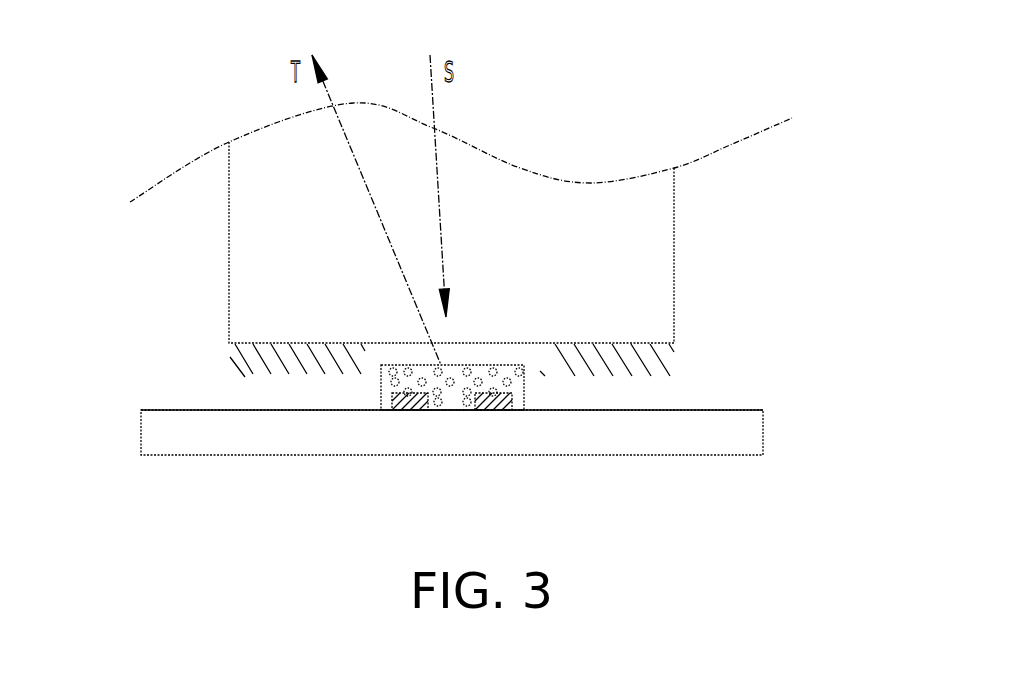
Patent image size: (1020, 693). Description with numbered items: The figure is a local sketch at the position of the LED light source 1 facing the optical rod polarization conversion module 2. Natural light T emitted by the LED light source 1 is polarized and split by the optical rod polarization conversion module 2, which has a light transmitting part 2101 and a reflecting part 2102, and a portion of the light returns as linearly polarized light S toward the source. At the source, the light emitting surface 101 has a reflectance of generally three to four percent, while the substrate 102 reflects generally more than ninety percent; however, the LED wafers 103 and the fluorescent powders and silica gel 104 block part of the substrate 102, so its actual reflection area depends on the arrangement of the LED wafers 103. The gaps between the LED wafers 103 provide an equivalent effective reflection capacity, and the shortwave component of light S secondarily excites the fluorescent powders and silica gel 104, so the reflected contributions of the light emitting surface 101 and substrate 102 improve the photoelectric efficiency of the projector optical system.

The LED light source 1 is at (754, 435).
The optical rod polarization conversion module 2 is at (646, 233).
The light emitting surface 101 is at (511, 366).
The substrate 102 is at (188, 410).
The LED wafers 103 is at (408, 407).
The fluorescent powders and silica gel 104 is at (385, 379).
The light transmitting part 2101 is at (483, 343).
The reflecting part 2102 is at (267, 342).